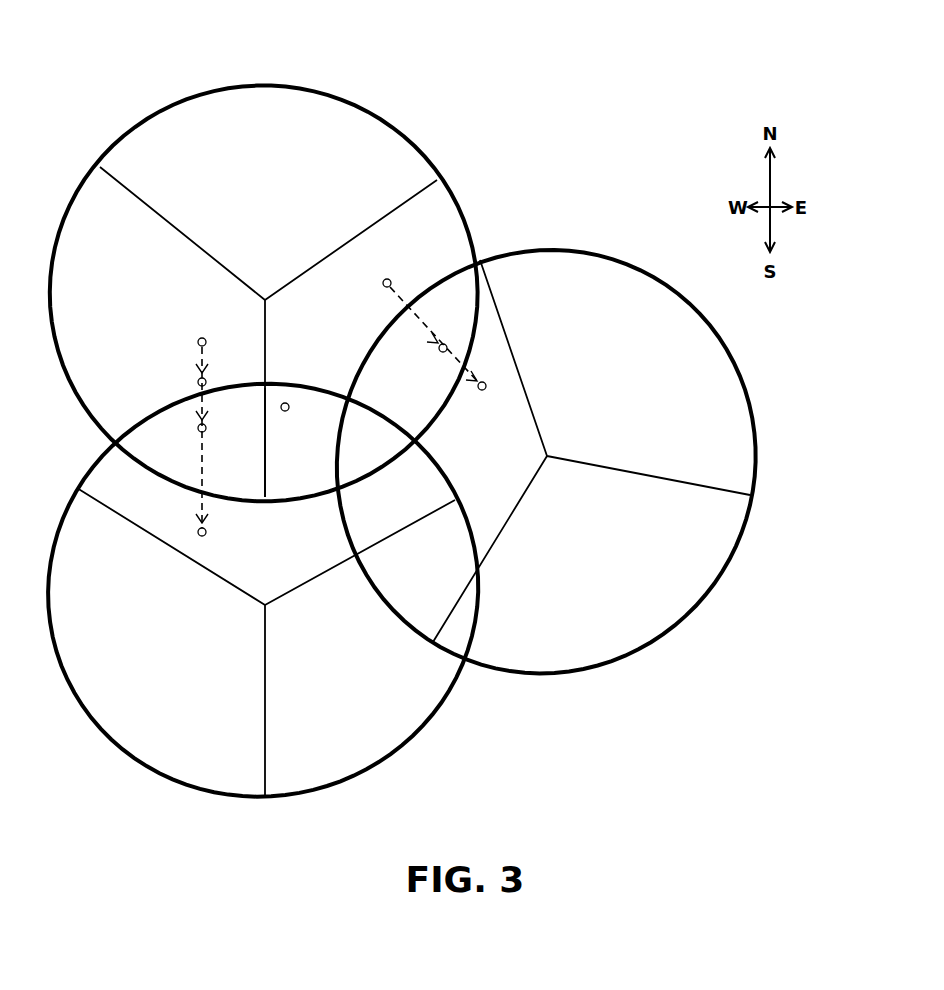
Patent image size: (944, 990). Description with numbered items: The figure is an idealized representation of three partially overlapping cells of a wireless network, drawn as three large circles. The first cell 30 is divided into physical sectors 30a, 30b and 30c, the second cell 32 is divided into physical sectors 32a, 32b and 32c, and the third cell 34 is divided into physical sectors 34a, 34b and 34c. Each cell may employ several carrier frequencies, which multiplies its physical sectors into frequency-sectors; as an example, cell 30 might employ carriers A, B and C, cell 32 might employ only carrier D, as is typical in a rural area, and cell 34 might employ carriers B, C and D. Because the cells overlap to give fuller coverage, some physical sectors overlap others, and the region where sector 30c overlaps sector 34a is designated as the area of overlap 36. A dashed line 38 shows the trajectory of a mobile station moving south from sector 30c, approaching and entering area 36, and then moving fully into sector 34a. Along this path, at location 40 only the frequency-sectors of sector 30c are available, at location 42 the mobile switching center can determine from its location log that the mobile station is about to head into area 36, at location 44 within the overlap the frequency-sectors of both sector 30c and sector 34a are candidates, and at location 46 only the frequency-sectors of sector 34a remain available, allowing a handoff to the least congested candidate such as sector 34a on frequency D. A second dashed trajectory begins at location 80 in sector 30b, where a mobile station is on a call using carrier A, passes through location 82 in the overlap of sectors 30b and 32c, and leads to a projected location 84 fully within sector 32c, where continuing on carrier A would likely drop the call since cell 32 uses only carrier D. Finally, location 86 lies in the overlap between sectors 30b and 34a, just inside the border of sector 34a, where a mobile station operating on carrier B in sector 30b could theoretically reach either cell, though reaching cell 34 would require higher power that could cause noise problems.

The cell 30 is at (402, 132).
The physical sector 30a is at (247, 232).
The physical sector 30b is at (312, 308).
The physical sector 30c is at (177, 306).
The cell 32 is at (747, 392).
The physical sector 32a is at (567, 416).
The physical sector 32b is at (563, 506).
The physical sector 32c is at (479, 456).
The cell 34 is at (122, 750).
The physical sector 34a is at (246, 576).
The physical sector 34b is at (302, 638).
The physical sector 34c is at (188, 638).
The area of overlap 36 is at (135, 448).
The dashed line 38 is at (205, 452).
The location 40 is at (198, 342).
The location 42 is at (198, 382).
The location 44 is at (206, 428).
The location 46 is at (206, 532).
The location 80 is at (390, 279).
The location 82 is at (439, 352).
The projected location 84 is at (486, 386).
The location 86 is at (289, 407).